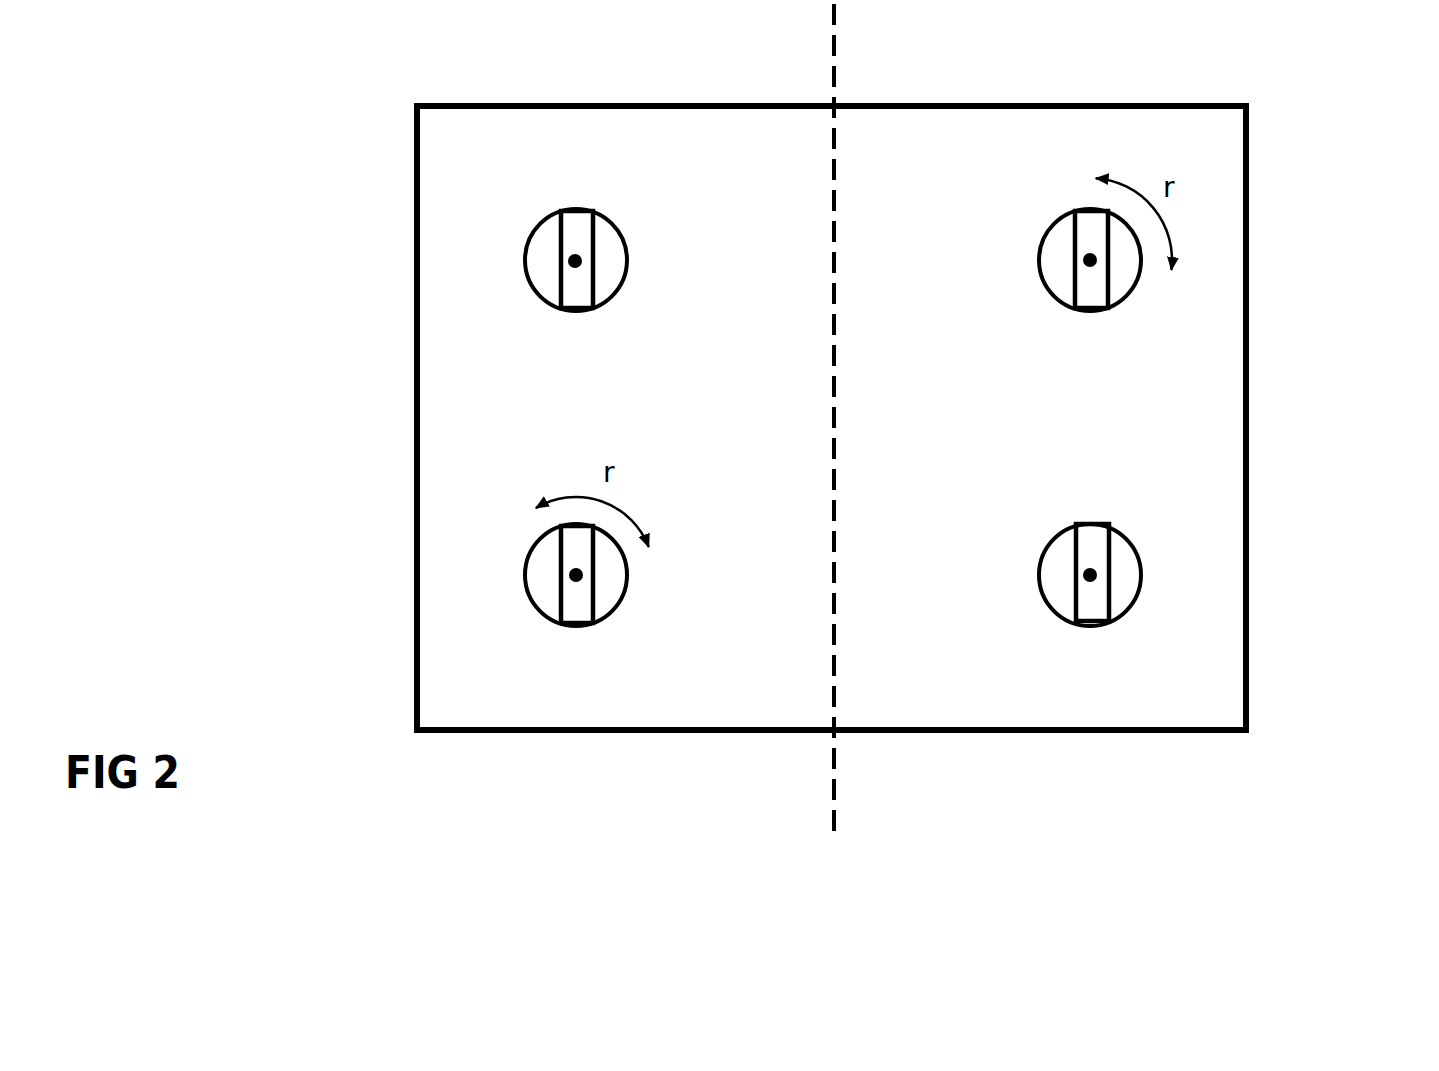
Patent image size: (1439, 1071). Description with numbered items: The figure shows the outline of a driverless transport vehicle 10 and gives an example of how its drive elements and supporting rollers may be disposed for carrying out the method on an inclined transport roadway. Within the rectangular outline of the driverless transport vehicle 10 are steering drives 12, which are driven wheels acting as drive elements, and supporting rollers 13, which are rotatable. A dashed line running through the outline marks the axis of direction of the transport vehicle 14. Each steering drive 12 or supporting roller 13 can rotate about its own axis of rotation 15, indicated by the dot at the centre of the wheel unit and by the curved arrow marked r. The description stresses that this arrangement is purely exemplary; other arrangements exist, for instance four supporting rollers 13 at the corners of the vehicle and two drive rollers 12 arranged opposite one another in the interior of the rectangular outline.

The driverless transport vehicle 10 is at (1247, 495).
The steering drive 12 is at (591, 247).
The supporting roller 13 is at (1072, 230).
The axis of direction of the transport vehicle 14 is at (834, 752).
The axis of rotation of a steering drive or a supporting roller 15 is at (1090, 258).